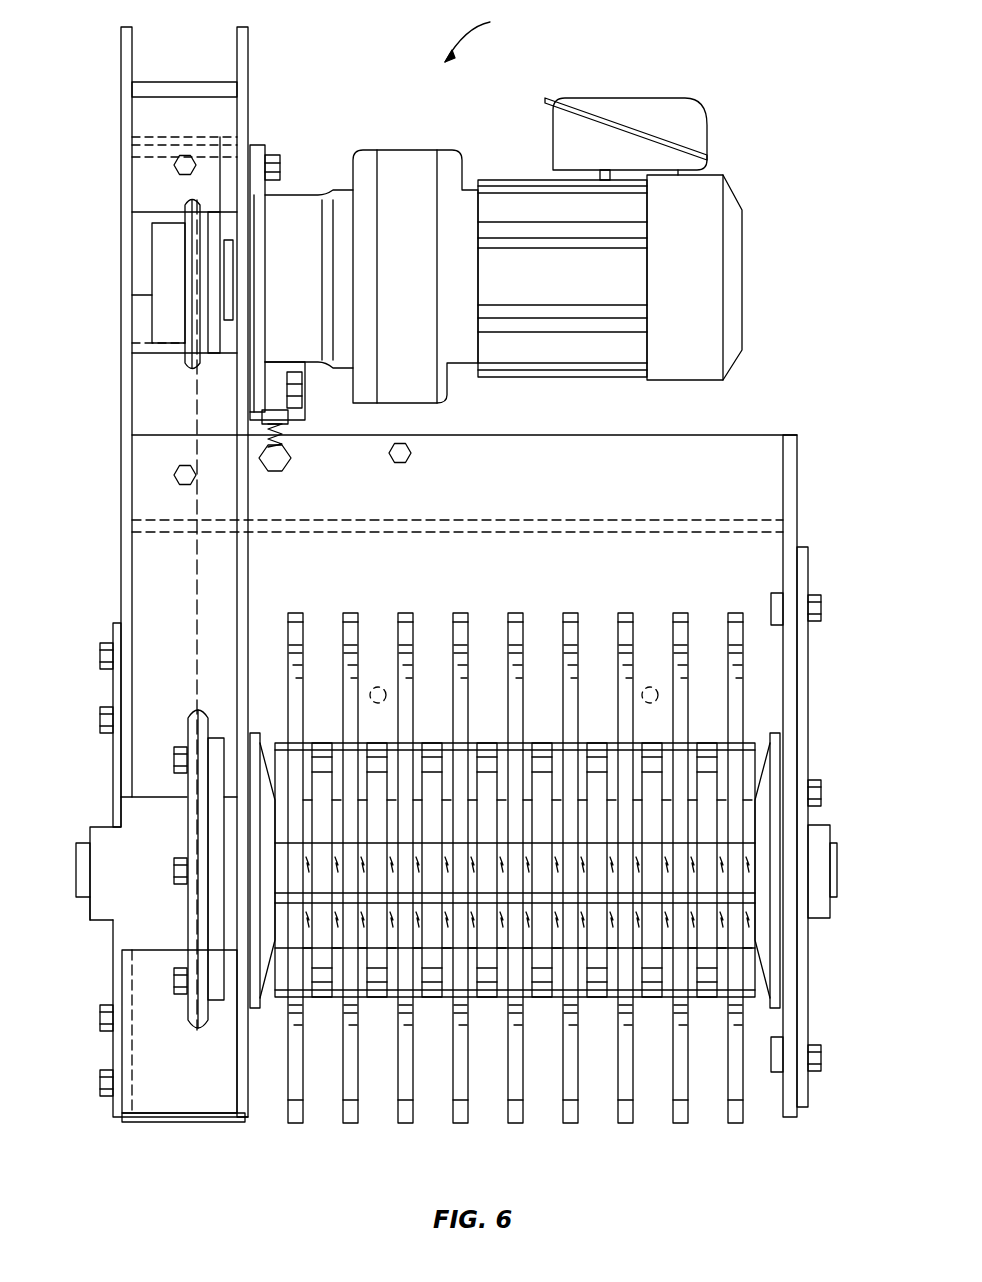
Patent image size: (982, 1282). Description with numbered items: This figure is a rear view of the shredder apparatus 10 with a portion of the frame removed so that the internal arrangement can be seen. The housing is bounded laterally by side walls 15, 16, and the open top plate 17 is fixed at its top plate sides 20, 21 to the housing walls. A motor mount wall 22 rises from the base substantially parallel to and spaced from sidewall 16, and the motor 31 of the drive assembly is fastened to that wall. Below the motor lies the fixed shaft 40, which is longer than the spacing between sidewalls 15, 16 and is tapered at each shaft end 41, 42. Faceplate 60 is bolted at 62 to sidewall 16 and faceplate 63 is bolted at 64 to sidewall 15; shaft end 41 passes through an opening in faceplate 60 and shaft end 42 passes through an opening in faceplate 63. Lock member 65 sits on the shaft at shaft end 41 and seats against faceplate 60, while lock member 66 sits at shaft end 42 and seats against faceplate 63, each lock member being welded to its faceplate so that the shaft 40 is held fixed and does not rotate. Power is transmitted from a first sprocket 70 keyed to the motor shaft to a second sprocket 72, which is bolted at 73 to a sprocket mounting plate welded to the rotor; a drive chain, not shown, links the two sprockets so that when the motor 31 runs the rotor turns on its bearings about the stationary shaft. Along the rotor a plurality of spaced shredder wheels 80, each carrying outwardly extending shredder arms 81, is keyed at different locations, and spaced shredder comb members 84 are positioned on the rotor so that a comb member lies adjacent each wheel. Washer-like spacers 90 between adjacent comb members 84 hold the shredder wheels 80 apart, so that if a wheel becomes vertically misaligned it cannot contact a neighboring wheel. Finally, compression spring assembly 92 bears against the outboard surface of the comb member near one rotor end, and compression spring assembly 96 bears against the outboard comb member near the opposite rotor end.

The shredder apparatus 10 is at (485, 35).
The side wall 15 is at (808, 575).
The side wall 16 is at (121, 100).
The open top plate 17 is at (433, 520).
The top plate side 20 is at (138, 501).
The top plate side 21 is at (782, 522).
The motor mount wall 22 is at (248, 97).
The motor 31 is at (505, 180).
The fixed shaft 40 is at (76, 858).
The shaft end 41 is at (90, 910).
The shaft end 42 is at (838, 870).
The faceplate 60 is at (113, 625).
The bolts 62 is at (100, 655).
The faceplate 63 is at (808, 713).
The bolts 64 is at (821, 605).
The lock member 65 is at (90, 830).
The lock member 66 is at (832, 835).
The first sprocket 70 is at (173, 355).
The second sprocket 72 is at (190, 708).
The bolts 73 is at (174, 758).
The shredder wheels 80 is at (305, 690).
The shredder arms 81 is at (296, 612).
The shredder comb members 84 is at (444, 1010).
The spacers 90 is at (325, 1010).
The compression spring assembly 92 is at (255, 733).
The compression spring assembly 96 is at (772, 733).